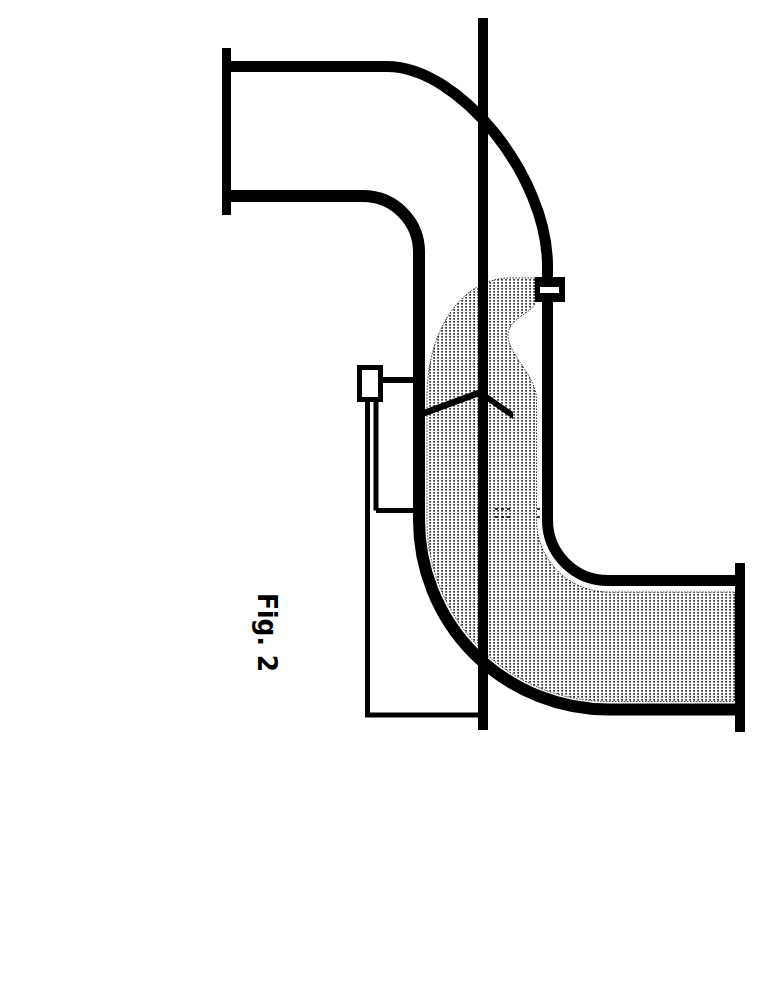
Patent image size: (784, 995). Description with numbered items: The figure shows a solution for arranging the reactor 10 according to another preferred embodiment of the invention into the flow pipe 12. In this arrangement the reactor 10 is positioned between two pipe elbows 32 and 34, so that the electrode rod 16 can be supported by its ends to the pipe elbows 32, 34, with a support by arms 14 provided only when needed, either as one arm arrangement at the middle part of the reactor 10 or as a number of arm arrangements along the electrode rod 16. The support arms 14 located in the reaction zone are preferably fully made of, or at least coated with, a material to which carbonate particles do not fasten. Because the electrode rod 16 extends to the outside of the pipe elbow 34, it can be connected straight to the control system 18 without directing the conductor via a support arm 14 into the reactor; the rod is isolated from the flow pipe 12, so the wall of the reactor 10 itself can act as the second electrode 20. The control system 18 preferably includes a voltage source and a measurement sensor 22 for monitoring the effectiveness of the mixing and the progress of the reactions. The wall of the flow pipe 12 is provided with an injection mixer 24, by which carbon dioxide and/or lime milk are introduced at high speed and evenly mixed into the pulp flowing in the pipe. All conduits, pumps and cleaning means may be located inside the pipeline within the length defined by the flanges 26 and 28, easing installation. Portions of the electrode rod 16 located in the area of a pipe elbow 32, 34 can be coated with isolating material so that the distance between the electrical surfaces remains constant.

The reactor 10 is at (610, 293).
The flow pipe 12 is at (19, 365).
The arms 14 is at (470, 392).
The electrode rod 16 is at (489, 33).
The control system 18 is at (357, 368).
The electrode 20 is at (430, 386).
The measurement sensor 22 is at (413, 510).
The injection mixer 24 is at (557, 273).
The flange 26 is at (233, 205).
The flange 28 is at (735, 565).
The pipe elbow 32 is at (518, 145).
The pipe elbow 34 is at (568, 533).